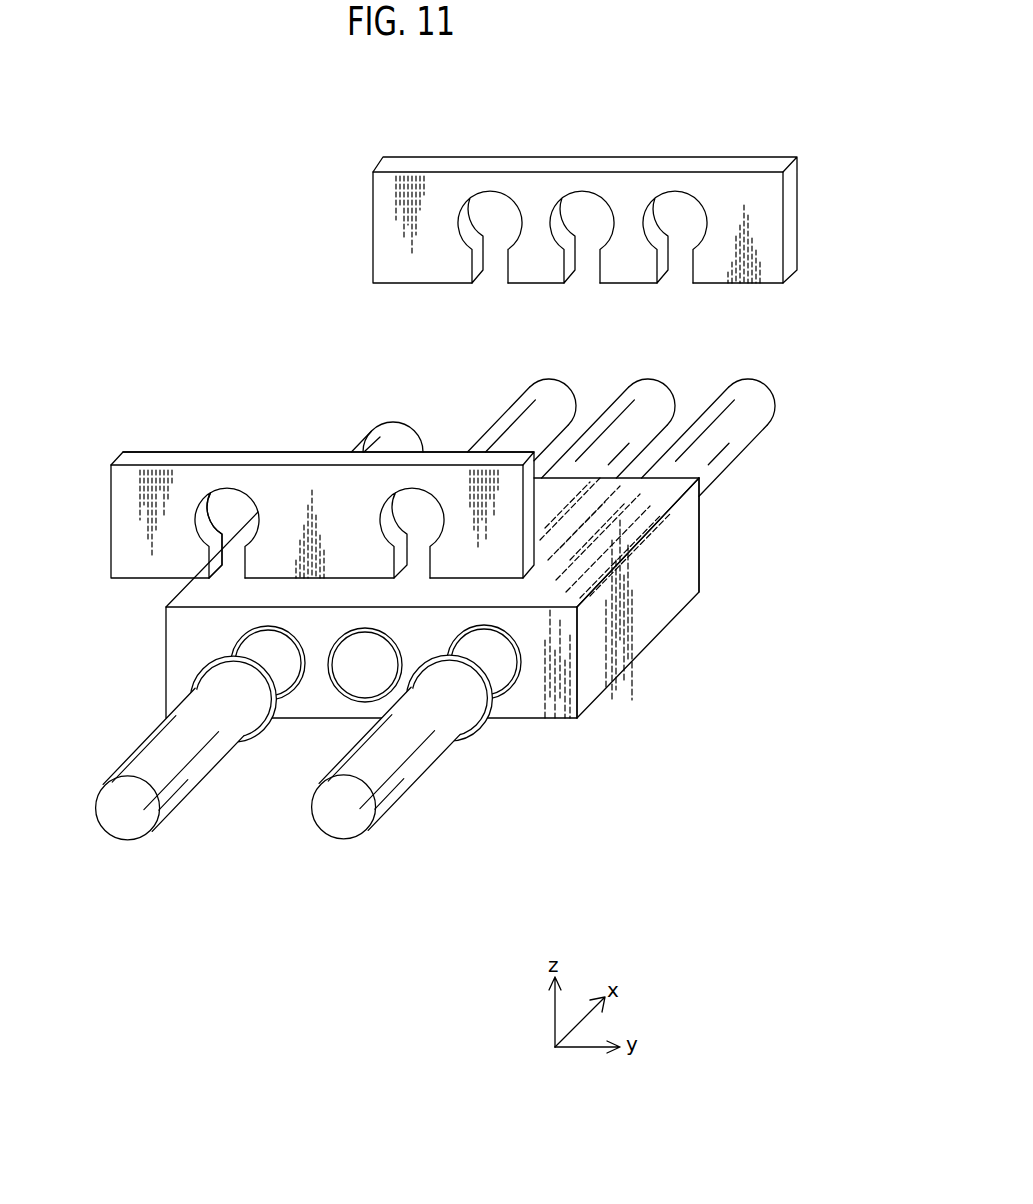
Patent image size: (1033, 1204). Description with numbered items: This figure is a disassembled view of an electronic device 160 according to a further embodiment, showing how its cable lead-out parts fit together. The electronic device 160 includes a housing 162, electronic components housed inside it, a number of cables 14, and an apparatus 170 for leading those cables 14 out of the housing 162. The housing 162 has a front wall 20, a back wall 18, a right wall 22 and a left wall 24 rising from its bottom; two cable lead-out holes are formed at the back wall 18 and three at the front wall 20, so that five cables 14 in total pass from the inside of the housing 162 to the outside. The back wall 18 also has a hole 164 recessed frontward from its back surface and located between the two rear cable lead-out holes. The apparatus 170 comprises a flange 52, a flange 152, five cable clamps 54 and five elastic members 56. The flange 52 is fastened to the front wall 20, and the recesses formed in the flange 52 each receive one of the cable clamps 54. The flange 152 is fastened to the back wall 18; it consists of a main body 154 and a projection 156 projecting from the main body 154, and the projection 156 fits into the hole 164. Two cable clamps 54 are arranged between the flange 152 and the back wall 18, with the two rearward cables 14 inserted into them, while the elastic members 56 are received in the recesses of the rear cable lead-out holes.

The electronic device 160 is at (809, 77).
The flange 52 is at (371, 229).
The cables 14 is at (748, 380).
The front wall 20 is at (703, 542).
The right wall 22 is at (640, 635).
The back wall 18 is at (572, 678).
The housing 162 is at (697, 621).
The hole 164 is at (352, 675).
The elastic members 56 is at (240, 629).
The cable clamps 54 is at (197, 683).
The apparatus 170 is at (276, 460).
The flange 152 is at (111, 523).
The main body 154 is at (297, 460).
The projection 156 is at (398, 438).
The left wall 24 is at (220, 532).